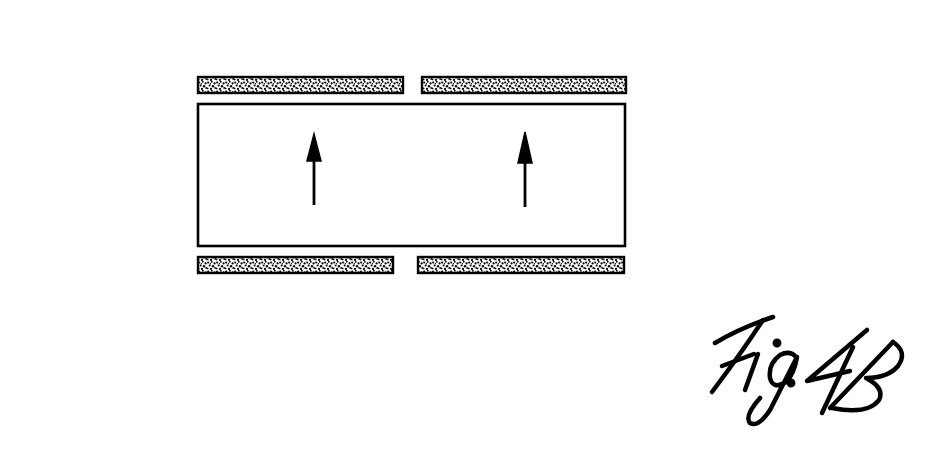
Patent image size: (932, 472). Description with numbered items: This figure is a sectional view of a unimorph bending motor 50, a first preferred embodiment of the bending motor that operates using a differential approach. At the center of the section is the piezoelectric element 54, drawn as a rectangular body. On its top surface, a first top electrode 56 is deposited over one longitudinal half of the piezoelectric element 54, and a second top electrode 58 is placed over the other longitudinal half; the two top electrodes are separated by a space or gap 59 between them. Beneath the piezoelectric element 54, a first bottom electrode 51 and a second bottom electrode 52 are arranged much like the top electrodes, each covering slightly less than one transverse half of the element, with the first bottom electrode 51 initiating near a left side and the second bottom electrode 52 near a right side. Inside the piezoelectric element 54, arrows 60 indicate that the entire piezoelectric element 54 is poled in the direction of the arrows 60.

The unimorph bending motor 50 is at (144, 92).
The first bottom electrode 51 is at (279, 273).
The second bottom electrode 52 is at (529, 274).
The piezoelectric element 54 is at (217, 160).
The first top electrode 56 is at (234, 82).
The second top electrode 58 is at (590, 81).
The gap 59 is at (410, 82).
The arrows 60 is at (523, 180).